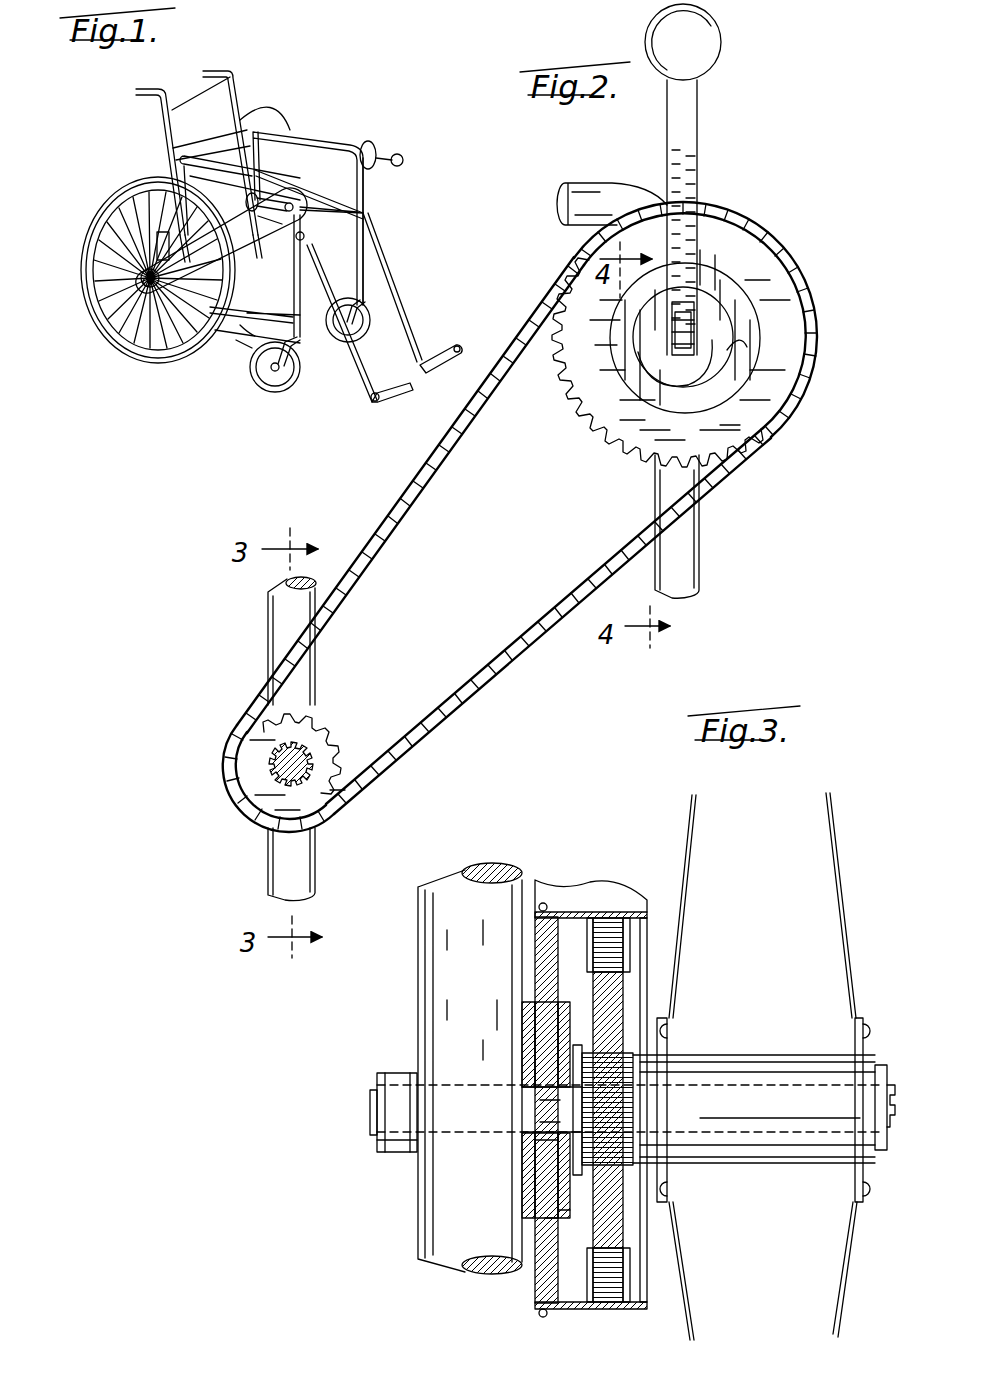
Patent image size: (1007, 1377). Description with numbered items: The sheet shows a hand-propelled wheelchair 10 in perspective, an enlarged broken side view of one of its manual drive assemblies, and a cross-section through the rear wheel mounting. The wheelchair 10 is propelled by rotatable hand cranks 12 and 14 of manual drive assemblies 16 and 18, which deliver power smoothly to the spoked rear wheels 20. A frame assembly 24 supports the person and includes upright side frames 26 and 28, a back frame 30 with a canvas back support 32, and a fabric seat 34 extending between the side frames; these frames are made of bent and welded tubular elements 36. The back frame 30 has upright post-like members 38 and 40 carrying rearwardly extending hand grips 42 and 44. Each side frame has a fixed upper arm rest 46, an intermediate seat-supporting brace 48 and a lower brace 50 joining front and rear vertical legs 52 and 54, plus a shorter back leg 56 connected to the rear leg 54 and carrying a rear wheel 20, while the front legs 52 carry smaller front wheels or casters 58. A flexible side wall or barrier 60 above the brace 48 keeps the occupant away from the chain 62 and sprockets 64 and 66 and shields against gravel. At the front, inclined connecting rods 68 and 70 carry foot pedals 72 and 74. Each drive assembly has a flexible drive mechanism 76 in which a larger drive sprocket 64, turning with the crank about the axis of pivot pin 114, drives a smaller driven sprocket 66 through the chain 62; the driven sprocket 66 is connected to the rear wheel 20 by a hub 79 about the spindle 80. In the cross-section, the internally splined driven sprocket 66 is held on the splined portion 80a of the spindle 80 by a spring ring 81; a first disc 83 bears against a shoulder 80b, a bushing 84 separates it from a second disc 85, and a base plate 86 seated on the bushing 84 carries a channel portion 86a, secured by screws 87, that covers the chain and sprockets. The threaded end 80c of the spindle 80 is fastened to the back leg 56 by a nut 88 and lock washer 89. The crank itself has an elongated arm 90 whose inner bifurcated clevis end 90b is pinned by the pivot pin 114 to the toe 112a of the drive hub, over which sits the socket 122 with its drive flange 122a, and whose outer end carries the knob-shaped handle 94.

In FIG. 1, the wheelchair 10 is at (356, 105).
In FIG. 1, the hand crank 12 is at (245, 202).
In FIG. 2, the hand crank 12 is at (700, 150).
In FIG. 1, the hand crank 14 is at (374, 150).
In FIG. 1, the manual drive assembly 16 is at (256, 227).
In FIG. 1, the manual drive assembly 18 is at (309, 193).
In FIG. 1, the rear wheel 20 is at (122, 352).
In FIG. 3, the rear wheel 20 is at (700, 836).
In FIG. 1, the frame assembly 24 is at (366, 213).
In FIG. 1, the side frame 26 is at (182, 156).
In FIG. 1, the side frame 28 is at (248, 118).
In FIG. 1, the back frame 30 is at (236, 78).
In FIG. 1, the back support 32 is at (196, 96).
In FIG. 1, the seat 34 is at (346, 224).
In FIG. 1, the tubular elements 36 is at (236, 354).
In FIG. 1, the post-like member 38 is at (165, 125).
In FIG. 1, the post-like member 40 is at (211, 127).
In FIG. 1, the hand grip 42 is at (134, 91).
In FIG. 1, the hand grip 44 is at (205, 70).
In FIG. 1, the arm rest 46 is at (322, 145).
In FIG. 2, the arm rest 46 is at (605, 182).
In FIG. 1, the seat-supporting brace 48 is at (236, 242).
In FIG. 1, the lower brace 50 is at (236, 346).
In FIG. 1, the front leg 52 is at (366, 184).
In FIG. 2, the front leg 52 is at (702, 546).
In FIG. 1, the rear leg 54 is at (182, 168).
In FIG. 1, the back leg 56 is at (145, 252).
In FIG. 2, the back leg 56 is at (268, 858).
In FIG. 3, the back leg 56 is at (418, 985).
In FIG. 1, the front wheel 58 is at (368, 340).
In FIG. 1, the side wall 60 is at (222, 163).
In FIG. 2, the drive chain 62 is at (478, 672).
In FIG. 3, the drive chain 62 is at (615, 930).
In FIG. 2, the drive sprocket 64 is at (618, 455).
In FIG. 2, the driven sprocket 66 is at (350, 722).
In FIG. 3, the driven sprocket 66 is at (625, 1000).
In FIG. 1, the connecting rod 68 is at (354, 382).
In FIG. 1, the connecting rod 70 is at (402, 320).
In FIG. 1, the foot pedal 72 is at (397, 402).
In FIG. 1, the foot support 74 is at (463, 356).
In FIG. 2, the flexible drive mechanism 76 is at (760, 458).
In FIG. 3, the hub 79 is at (742, 1162).
In FIG. 2, the spindle 80 is at (305, 752).
In FIG. 3, the spindle 80 is at (555, 1074).
In FIG. 3, the splined portion 80a is at (628, 1050).
In FIG. 3, the shoulder 80b is at (568, 1208).
In FIG. 3, the threaded end 80c is at (370, 1100).
In FIG. 3, the spring ring 81 is at (560, 1052).
In FIG. 3, the first disc 83 is at (552, 1218).
In FIG. 3, the bushing 84 is at (552, 1140).
In FIG. 3, the second disc 85 is at (528, 1003).
In FIG. 1, the base plate 86 is at (304, 236).
In FIG. 3, the base plate 86 is at (534, 940).
In FIG. 3, the channel portion 86a is at (592, 910).
In FIG. 3, the screws 87 is at (546, 905).
In FIG. 3, the nut 88 is at (376, 1150).
In FIG. 3, the lock washer 89 is at (398, 1072).
In FIG. 2, the crank arm 90 is at (668, 122).
In FIG. 2, the inner bifurcated clevis end 90b is at (710, 398).
In FIG. 1, the knob-shaped handle 94 is at (402, 158).
In FIG. 2, the knob-shaped handle 94 is at (720, 42).
In FIG. 2, the toe 112a is at (700, 330).
In FIG. 2, the pivot pin 114 is at (655, 390).
In FIG. 2, the socket 122 is at (720, 370).
In FIG. 2, the drive flange 122a is at (745, 275).